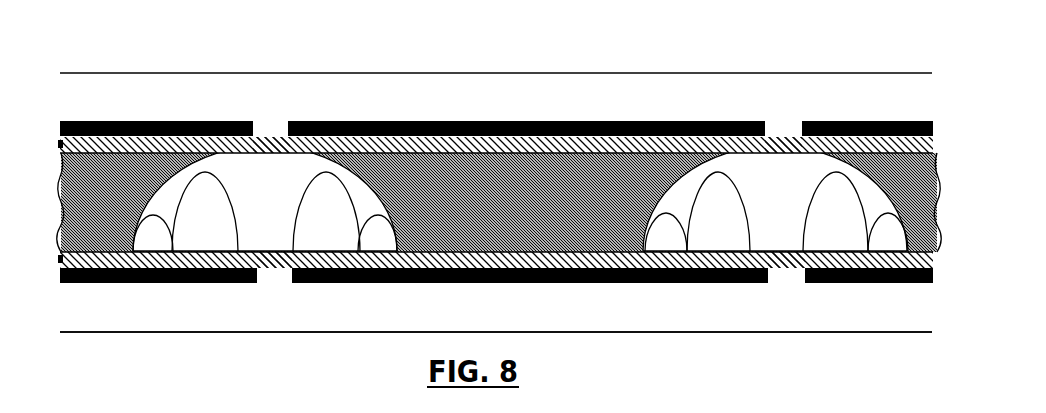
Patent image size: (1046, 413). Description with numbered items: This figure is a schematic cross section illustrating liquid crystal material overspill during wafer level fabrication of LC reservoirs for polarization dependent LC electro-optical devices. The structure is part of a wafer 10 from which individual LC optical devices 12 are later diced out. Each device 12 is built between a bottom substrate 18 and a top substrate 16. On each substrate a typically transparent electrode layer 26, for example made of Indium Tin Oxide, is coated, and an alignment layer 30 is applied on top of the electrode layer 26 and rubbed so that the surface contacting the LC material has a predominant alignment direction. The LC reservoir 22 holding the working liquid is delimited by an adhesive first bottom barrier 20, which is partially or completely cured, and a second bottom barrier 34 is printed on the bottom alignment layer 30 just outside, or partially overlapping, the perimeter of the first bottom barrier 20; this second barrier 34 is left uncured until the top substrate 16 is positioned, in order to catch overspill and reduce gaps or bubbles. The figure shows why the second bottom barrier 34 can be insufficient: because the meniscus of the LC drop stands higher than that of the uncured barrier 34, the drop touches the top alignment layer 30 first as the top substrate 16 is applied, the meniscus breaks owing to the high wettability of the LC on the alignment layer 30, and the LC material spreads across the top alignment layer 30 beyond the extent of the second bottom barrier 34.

The wafer 10 is at (842, 339).
The LC optical device 12 is at (748, 67).
The top substrate 16 is at (888, 105).
The bottom substrate 18 is at (887, 318).
The first bottom barrier 20 is at (674, 217).
The LC reservoir 22 is at (613, 232).
The electrode layer 26 is at (132, 119).
The alignment layer 30 is at (269, 137).
The second bottom barrier 34 is at (229, 203).